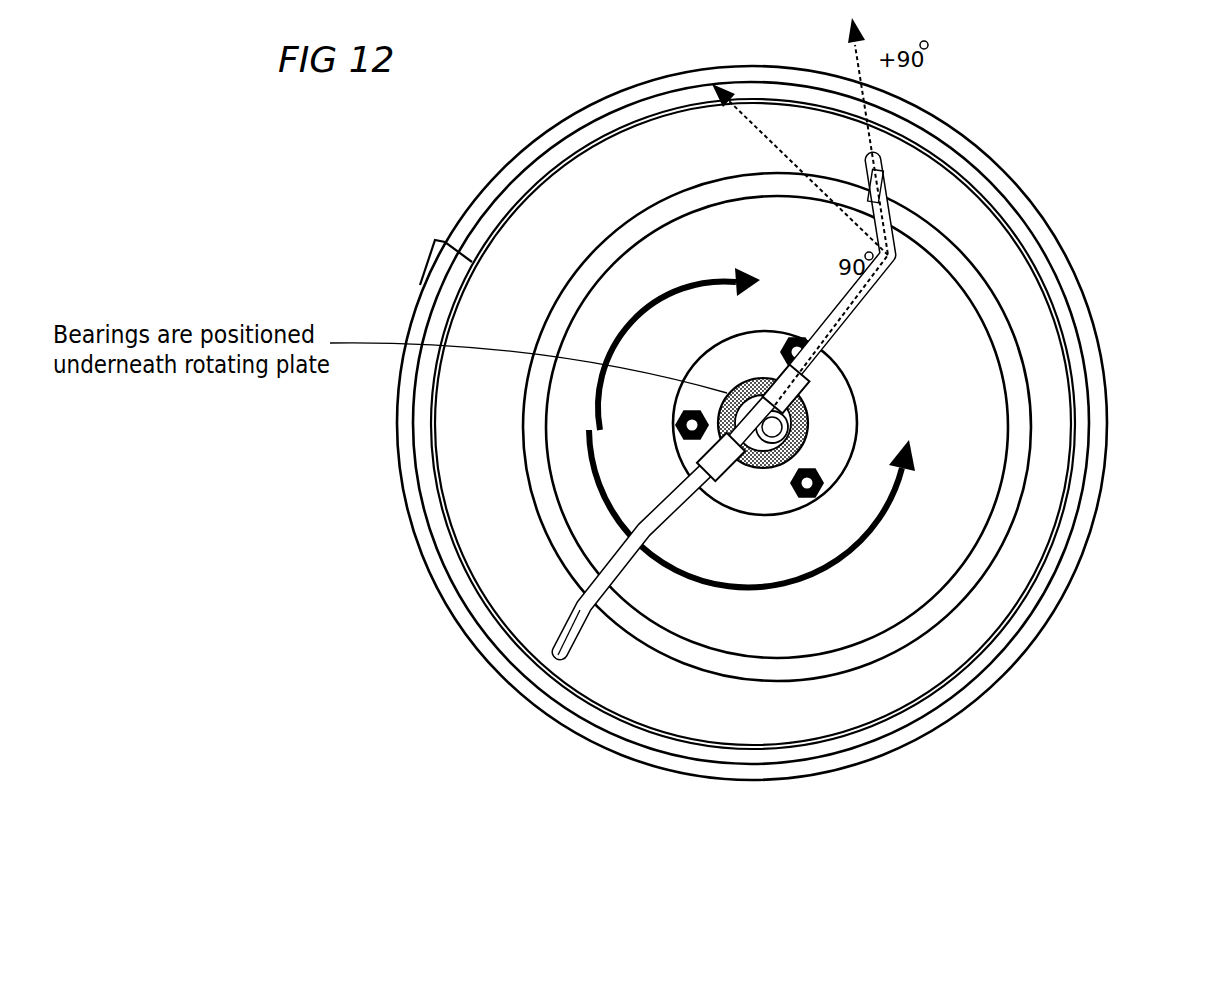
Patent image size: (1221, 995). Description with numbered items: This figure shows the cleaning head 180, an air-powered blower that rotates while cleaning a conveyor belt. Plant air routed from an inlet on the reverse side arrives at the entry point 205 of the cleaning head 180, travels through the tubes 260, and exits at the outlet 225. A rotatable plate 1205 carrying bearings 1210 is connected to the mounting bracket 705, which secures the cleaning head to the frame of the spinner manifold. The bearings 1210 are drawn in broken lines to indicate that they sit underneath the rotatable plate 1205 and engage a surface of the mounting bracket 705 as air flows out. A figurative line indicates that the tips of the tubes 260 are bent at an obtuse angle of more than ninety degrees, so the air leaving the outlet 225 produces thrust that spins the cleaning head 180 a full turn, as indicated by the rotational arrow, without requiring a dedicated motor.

The cleaning head 180 is at (1062, 127).
The mounting bracket 705 is at (1108, 381).
The entry point 205 is at (813, 418).
The bearings 1210 is at (748, 380).
The rotatable plate 1205 is at (810, 398).
The tubes 260 is at (858, 316).
The outlet 225 is at (556, 651).